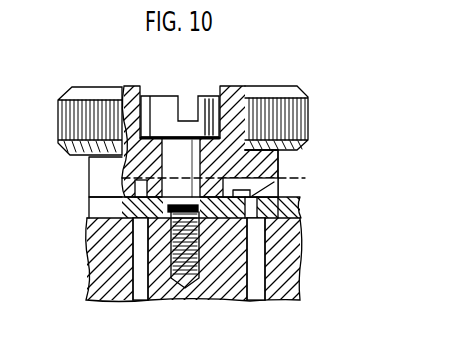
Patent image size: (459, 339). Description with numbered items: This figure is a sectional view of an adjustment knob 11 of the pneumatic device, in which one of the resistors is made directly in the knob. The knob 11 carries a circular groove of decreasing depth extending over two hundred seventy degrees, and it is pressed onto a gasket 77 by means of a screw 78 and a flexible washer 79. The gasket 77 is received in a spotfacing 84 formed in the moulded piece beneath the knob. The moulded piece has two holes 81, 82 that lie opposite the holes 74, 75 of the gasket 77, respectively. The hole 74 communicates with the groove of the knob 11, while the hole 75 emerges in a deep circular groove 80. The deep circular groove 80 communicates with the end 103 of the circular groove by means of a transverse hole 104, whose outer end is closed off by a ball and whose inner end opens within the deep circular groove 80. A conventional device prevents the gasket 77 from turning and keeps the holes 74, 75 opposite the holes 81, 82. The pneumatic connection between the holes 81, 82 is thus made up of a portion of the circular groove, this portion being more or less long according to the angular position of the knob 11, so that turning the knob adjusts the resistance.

The knob 11 is at (291, 110).
The hole 74 is at (268, 227).
The hole 75 is at (140, 205).
The gasket 77 is at (280, 202).
The screw 78 is at (163, 106).
The flexible washer 79 is at (221, 133).
The deep circular groove 80 is at (137, 190).
The hole 81 is at (257, 287).
The hole 82 is at (141, 292).
The spotfacing 84 is at (257, 210).
The end of the groove 103 is at (268, 181).
The transverse hole 104 is at (265, 171).